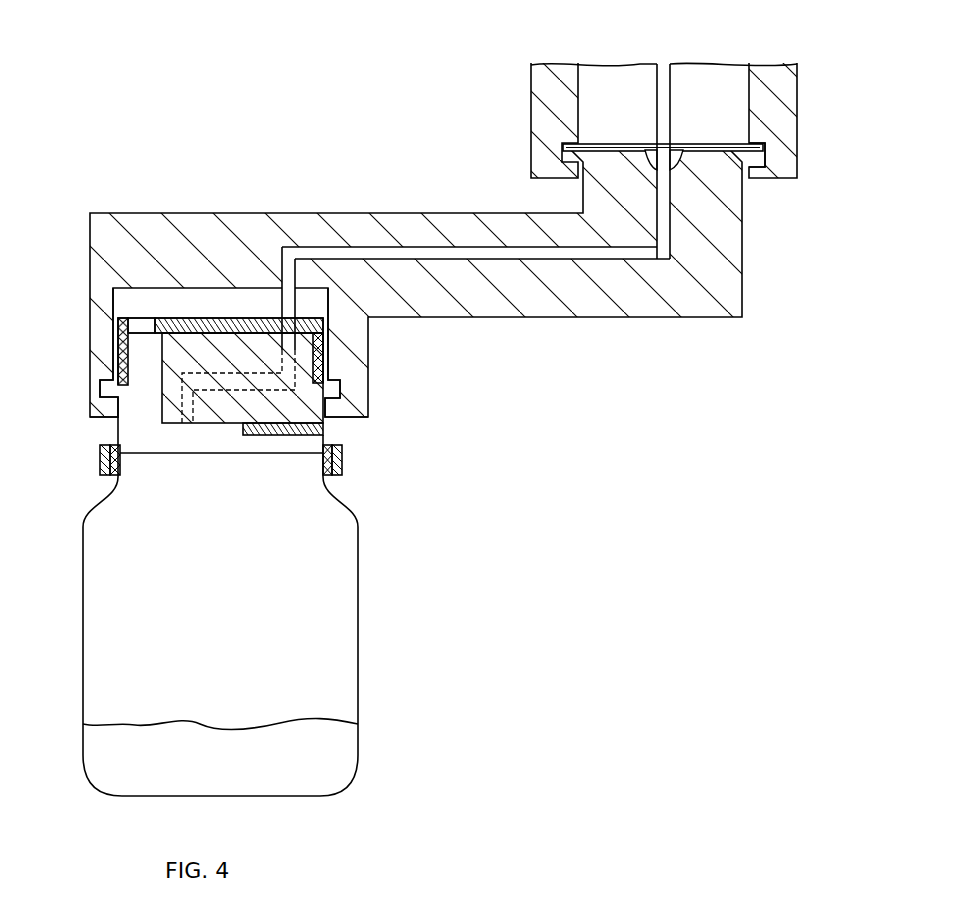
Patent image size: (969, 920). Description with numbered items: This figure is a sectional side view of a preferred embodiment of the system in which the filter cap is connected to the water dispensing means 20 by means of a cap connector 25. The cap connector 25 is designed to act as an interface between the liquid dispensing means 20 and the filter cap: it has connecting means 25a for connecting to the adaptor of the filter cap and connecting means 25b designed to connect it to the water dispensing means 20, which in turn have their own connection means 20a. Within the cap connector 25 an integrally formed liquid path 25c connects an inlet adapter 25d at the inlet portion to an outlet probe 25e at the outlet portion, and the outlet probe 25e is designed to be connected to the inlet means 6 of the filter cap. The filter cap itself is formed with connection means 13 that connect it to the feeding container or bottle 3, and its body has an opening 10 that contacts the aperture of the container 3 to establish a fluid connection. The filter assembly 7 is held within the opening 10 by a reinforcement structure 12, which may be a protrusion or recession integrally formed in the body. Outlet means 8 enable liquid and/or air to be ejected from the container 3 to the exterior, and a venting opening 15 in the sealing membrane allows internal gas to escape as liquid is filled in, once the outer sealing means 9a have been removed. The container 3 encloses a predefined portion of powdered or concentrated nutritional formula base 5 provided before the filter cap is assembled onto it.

The liquid dispensing means 20 is at (797, 98).
The connection means 20a is at (768, 170).
The cap connector 25 is at (550, 307).
The connecting means 25a is at (348, 412).
The connecting means 25b is at (563, 156).
The liquid path 25c is at (365, 245).
The inlet adapter 25d is at (675, 157).
The outlet probe 25e is at (287, 305).
The inlet means 6 is at (287, 372).
The filter assembly 7 is at (223, 407).
The outlet means 8 is at (142, 370).
The outer sealing means 9a is at (170, 323).
The venting opening 15 is at (140, 325).
The reinforcement structure 12 is at (282, 437).
The connection means 13 is at (342, 468).
The opening 10 is at (145, 455).
The feeding container 3 is at (358, 640).
The nutritional formula base 5 is at (338, 770).